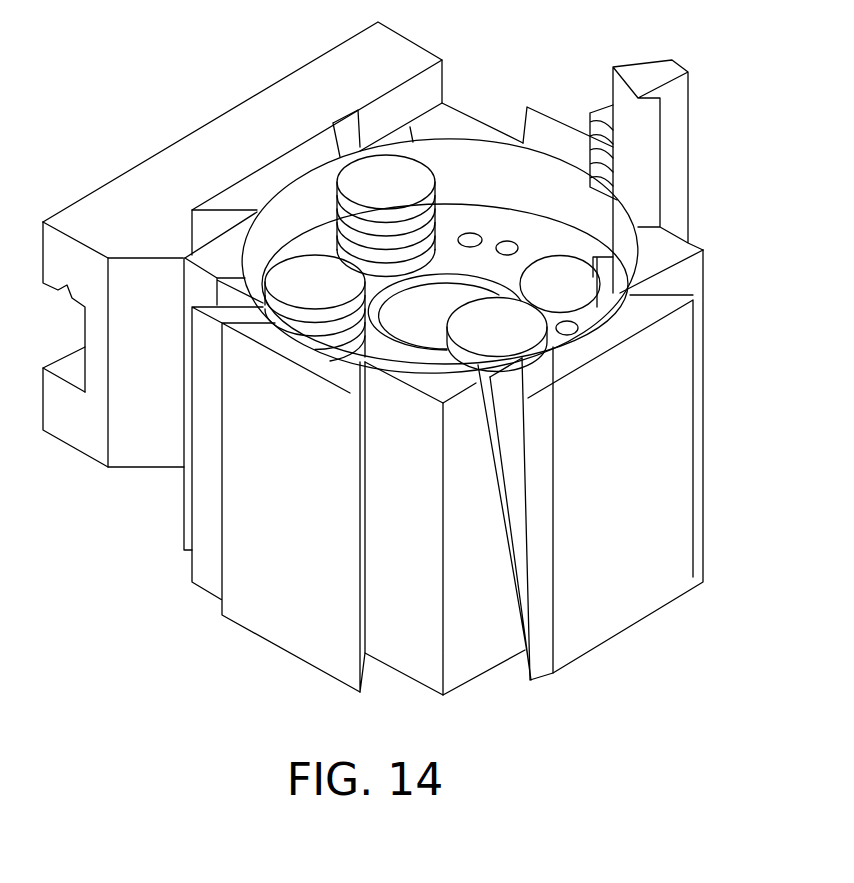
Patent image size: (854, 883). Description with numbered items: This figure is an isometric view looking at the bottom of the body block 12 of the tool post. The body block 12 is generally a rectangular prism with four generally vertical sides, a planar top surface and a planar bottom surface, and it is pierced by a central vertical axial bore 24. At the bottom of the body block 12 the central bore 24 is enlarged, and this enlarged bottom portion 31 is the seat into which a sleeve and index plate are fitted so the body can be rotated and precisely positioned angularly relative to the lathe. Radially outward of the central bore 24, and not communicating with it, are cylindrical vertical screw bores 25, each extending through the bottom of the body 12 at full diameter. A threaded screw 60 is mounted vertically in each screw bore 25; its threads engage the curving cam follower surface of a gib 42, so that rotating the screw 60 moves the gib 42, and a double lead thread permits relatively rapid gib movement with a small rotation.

The body block 12 is at (703, 305).
The central vertical axial bore 24 is at (422, 340).
The screw bore 25 is at (570, 275).
The enlarged portion 31 is at (477, 173).
The gib 42 is at (688, 103).
The screw 60 is at (417, 157).